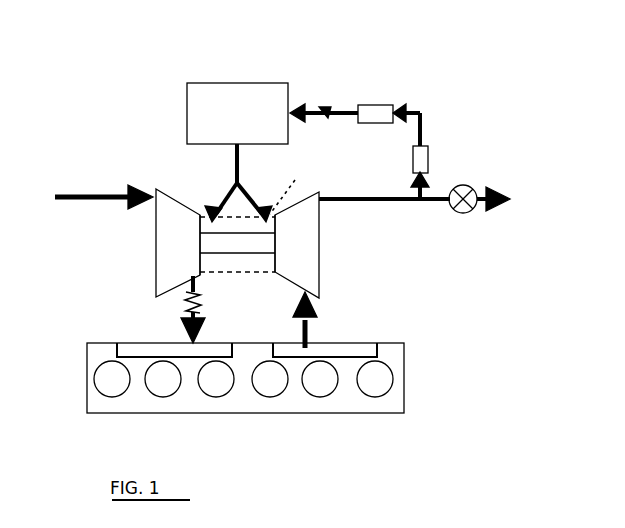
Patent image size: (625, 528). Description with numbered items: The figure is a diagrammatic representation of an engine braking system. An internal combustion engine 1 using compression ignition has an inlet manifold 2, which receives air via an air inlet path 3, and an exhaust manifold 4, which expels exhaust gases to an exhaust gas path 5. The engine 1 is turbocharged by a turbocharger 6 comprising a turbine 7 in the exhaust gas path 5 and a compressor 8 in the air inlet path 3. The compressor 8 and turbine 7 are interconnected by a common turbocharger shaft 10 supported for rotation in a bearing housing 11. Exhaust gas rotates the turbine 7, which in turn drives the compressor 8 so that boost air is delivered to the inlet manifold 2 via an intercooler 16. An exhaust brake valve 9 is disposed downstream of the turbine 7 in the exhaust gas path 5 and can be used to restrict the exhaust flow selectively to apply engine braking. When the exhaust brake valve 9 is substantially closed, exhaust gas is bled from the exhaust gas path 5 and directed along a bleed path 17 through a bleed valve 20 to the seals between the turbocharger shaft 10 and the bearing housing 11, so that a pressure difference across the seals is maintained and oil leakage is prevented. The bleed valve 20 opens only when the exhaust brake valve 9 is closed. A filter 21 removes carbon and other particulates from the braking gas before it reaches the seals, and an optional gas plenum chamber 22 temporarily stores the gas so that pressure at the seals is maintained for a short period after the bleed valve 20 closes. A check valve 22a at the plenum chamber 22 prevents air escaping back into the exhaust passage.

The internal combustion engine 1 is at (218, 408).
The inlet manifold 2 is at (174, 351).
The air inlet path 3 is at (80, 205).
The exhaust manifold 4 is at (325, 350).
The exhaust gas path 5 is at (311, 326).
The turbocharger 6 is at (276, 256).
The turbine 7 is at (302, 252).
The compressor 8 is at (178, 252).
The exhaust brake valve 9 is at (477, 210).
The turbocharger shaft 10 is at (241, 250).
The bearing housing 11 is at (294, 189).
The intercooler 16 is at (185, 304).
The bleed path 17 is at (226, 188).
The bleed valve 20 is at (383, 104).
The filter 21 is at (430, 155).
The gas plenum chamber 22 is at (236, 123).
The check valve 22a is at (326, 104).